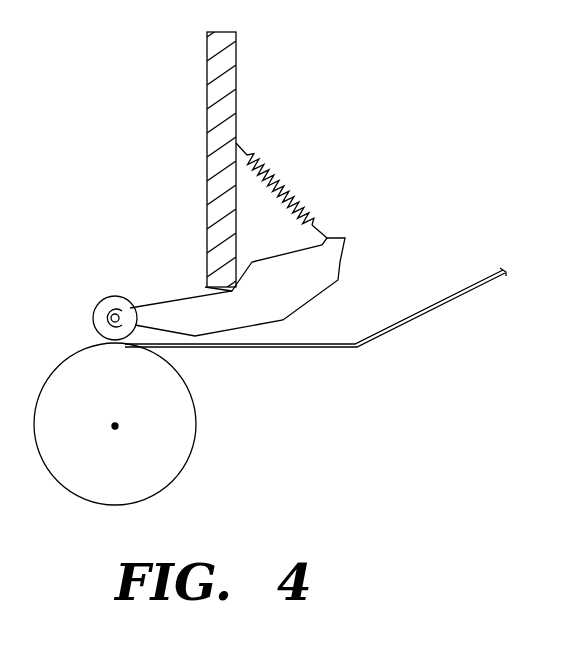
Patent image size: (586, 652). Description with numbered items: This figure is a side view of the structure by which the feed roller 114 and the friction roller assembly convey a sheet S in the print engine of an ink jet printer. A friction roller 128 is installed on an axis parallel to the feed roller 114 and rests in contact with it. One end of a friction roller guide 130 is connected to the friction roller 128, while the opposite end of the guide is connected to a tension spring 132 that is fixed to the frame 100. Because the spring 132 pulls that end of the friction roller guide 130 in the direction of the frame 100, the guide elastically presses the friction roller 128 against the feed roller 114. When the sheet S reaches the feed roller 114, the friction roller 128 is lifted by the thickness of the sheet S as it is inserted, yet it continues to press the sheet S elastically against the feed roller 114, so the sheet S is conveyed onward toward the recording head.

The frame 100 is at (215, 90).
The tension spring 132 is at (290, 186).
The friction roller guide 130 is at (333, 266).
The friction roller 128 is at (100, 302).
The feed roller 114 is at (196, 425).
The sheet S is at (437, 311).